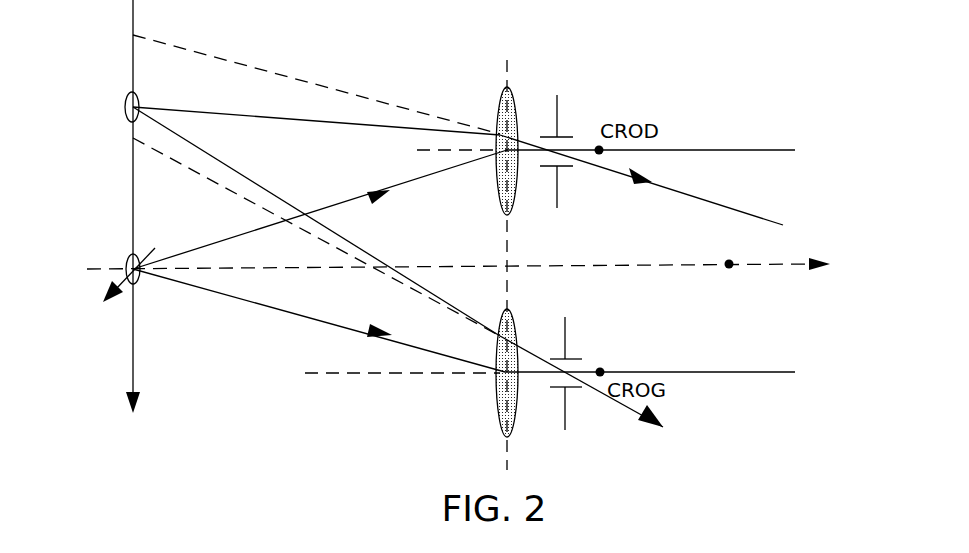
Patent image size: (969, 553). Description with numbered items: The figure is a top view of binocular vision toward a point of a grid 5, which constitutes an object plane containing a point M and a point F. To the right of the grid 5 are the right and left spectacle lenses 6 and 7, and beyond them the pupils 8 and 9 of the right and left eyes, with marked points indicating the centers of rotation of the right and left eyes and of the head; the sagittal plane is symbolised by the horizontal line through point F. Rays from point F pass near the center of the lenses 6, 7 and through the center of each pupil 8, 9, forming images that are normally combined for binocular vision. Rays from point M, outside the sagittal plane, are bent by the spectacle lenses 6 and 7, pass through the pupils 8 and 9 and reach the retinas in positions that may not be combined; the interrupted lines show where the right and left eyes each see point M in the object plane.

The grid 5 is at (139, 400).
The right spectacle lens 6 is at (512, 97).
The left spectacle lens 7 is at (502, 417).
The right eye pupil 8 is at (557, 118).
The left eye pupil 9 is at (567, 402).